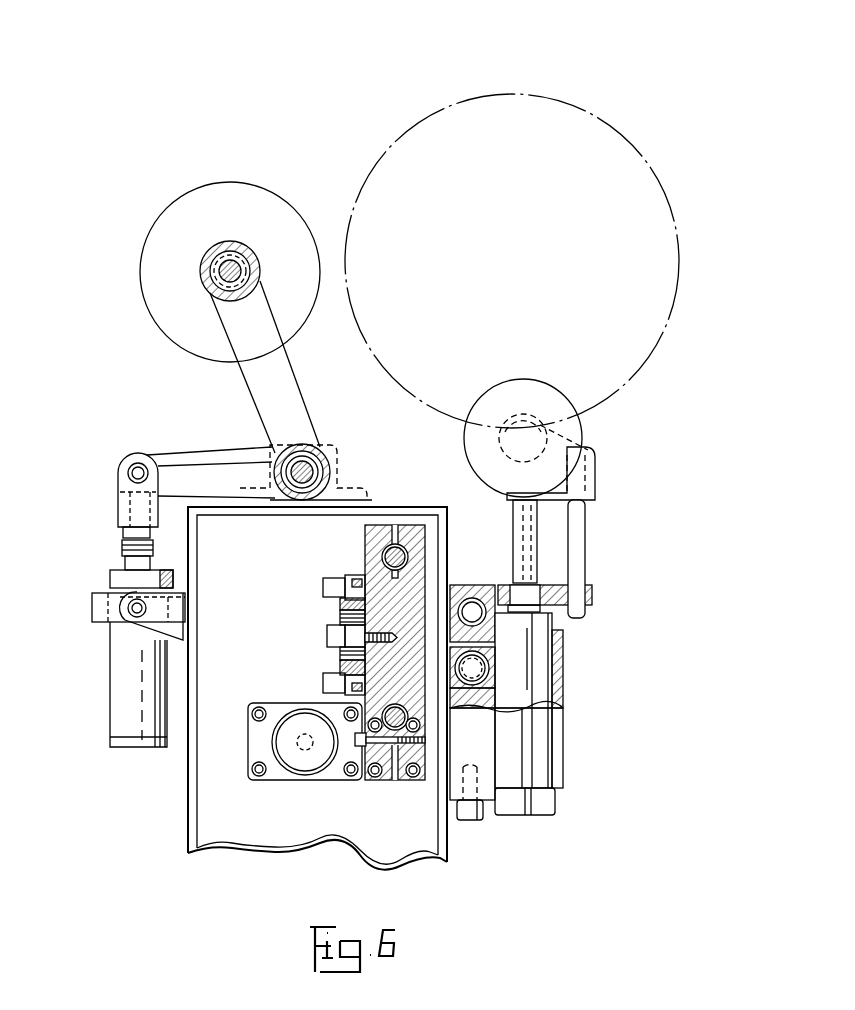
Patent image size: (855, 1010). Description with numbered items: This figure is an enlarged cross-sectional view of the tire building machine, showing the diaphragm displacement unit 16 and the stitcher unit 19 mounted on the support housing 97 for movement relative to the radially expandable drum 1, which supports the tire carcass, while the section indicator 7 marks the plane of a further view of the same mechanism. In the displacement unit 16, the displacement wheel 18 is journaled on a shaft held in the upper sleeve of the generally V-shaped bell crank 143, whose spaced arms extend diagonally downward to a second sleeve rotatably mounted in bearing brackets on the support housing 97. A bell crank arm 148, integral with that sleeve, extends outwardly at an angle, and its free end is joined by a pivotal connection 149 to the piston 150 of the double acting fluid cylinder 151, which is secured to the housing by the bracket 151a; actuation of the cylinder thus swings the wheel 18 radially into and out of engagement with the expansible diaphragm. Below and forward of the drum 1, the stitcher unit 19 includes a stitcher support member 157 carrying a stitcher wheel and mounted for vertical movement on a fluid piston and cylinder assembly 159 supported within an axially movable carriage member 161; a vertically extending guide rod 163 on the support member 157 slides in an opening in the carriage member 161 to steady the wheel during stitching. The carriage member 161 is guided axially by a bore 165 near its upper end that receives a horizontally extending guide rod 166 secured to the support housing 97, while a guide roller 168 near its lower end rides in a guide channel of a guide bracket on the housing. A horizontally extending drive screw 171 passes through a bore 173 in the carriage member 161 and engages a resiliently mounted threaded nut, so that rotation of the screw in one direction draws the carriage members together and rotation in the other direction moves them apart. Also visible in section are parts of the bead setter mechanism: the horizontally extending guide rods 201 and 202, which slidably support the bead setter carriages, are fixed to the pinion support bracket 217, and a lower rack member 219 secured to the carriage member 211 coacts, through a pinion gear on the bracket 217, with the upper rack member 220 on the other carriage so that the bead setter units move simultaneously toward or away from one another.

The radially expandable drum 1 is at (566, 96).
The section line 7- 7 is at (60, 260).
The diaphragm displacement unit 16 is at (146, 417).
The displacement wheel 18 is at (276, 192).
The stitcher unit 19 is at (598, 454).
The support housing 97 is at (188, 806).
The bell crank 143 is at (306, 400).
The bell crank arm 148 is at (199, 457).
The pivotal connection 149 is at (128, 473).
The piston 150 is at (120, 535).
The double acting fluid cylinder 151 is at (112, 668).
The bracket 151a is at (175, 588).
The stitcher support member 157 is at (597, 496).
The cylinder assembly 159 is at (553, 661).
The carriage member 161 is at (563, 706).
The guide rod 163 is at (586, 554).
The bore 165 is at (487, 598).
The guide rod 166 is at (466, 597).
The guide roller 168 is at (478, 822).
The drive screw 171 is at (485, 666).
The bore 173 is at (490, 674).
The guide rod 201 is at (384, 553).
The guide rod 202 is at (393, 728).
The carriage member 211 is at (340, 621).
The pinion support bracket 217 is at (365, 566).
The lower rack member 219 is at (340, 666).
The upper rack member 220 is at (340, 606).